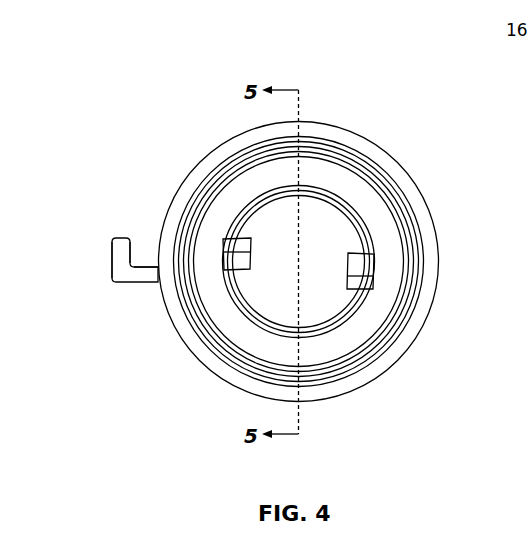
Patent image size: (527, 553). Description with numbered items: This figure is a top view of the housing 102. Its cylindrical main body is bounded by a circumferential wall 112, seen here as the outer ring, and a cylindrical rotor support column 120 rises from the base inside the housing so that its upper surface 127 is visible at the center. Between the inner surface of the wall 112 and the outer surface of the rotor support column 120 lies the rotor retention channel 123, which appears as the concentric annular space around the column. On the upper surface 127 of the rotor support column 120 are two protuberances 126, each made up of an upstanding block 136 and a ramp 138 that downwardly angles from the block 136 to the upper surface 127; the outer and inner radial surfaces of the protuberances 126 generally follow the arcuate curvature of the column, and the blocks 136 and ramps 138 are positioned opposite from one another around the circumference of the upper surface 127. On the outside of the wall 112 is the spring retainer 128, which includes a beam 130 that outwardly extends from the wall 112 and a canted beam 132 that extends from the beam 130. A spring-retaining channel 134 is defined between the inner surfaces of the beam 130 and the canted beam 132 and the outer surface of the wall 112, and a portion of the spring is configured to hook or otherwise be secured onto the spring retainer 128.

The housing 102 is at (178, 94).
The circumferential wall 112 is at (192, 174).
The rotor support column 120 is at (323, 222).
The rotor retention channel 123 is at (373, 212).
The protuberance 126 is at (237, 266).
The upper surface 127 is at (323, 300).
The spring retainer 128 is at (90, 273).
The beam 130 is at (147, 284).
The canted beam 132 is at (112, 257).
The spring-retaining channel 134 is at (147, 243).
The block 136 is at (243, 275).
The ramp 138 is at (250, 237).